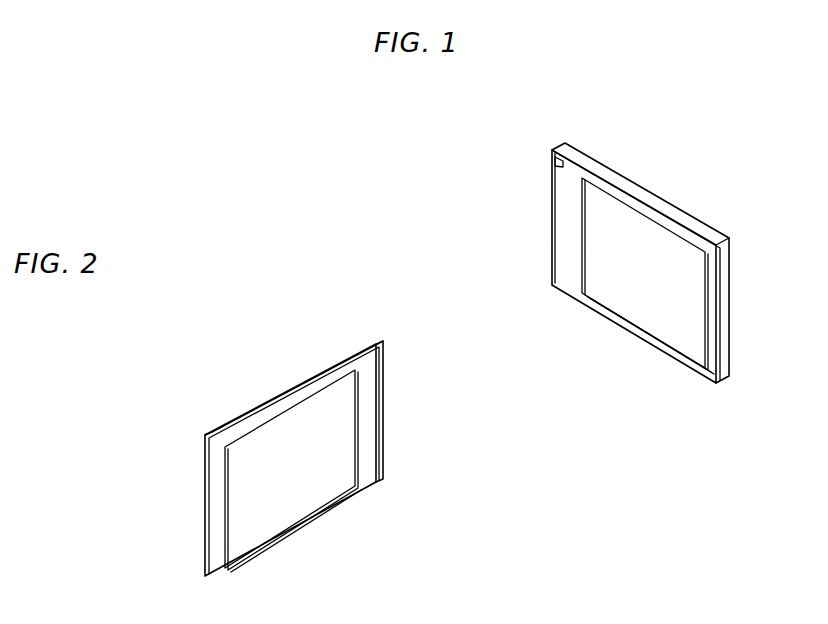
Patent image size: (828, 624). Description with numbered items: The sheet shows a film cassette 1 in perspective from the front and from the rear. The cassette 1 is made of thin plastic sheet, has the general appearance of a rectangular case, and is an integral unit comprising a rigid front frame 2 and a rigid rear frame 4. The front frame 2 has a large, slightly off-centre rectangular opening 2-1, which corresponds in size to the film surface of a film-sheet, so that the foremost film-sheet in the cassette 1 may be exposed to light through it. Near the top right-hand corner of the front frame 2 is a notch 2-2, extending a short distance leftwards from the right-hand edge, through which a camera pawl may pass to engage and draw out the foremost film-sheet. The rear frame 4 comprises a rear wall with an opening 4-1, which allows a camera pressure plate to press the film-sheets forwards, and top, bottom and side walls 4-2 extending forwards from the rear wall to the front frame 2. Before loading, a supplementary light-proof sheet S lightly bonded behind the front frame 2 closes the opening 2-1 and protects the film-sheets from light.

In FIG. 1, the cassette 1 is at (606, 161).
In FIG. 2, the cassette 1 is at (265, 395).
In FIG. 1, the front frame 2 is at (568, 207).
In FIG. 1, the rectangular opening 2-1 is at (612, 304).
In FIG. 1, the notch 2-2 is at (555, 160).
In FIG. 2, the rear frame 4 is at (373, 471).
In FIG. 2, the opening 4-1 is at (274, 543).
In FIG. 1, the top, bottom and side walls 4-2 is at (645, 196).
In FIG. 2, the top, bottom and side walls 4-2 is at (348, 360).
In FIG. 1, the supplementary light-proof sheet S is at (683, 285).